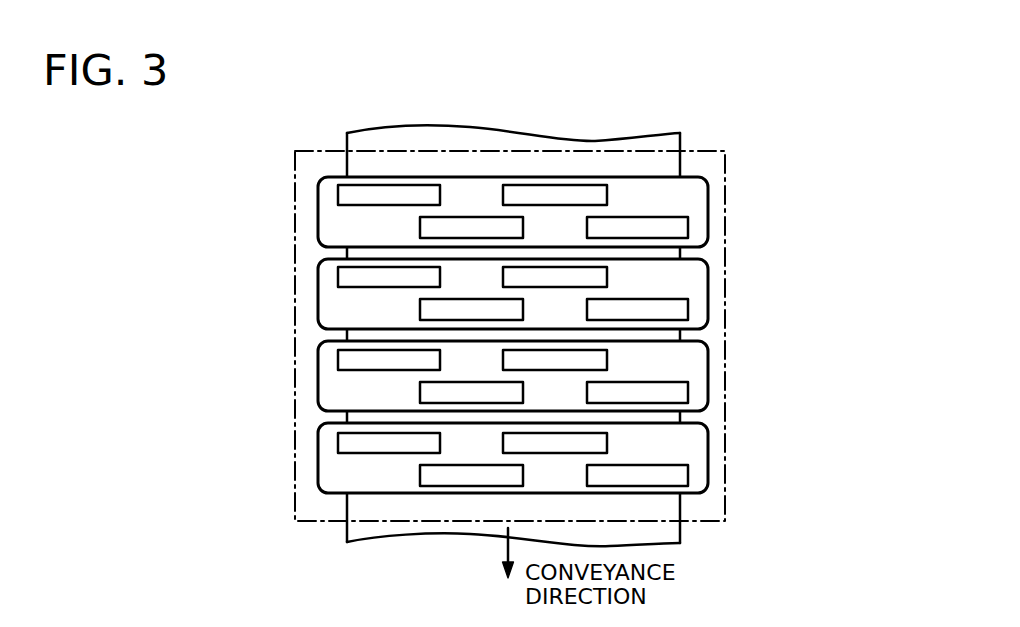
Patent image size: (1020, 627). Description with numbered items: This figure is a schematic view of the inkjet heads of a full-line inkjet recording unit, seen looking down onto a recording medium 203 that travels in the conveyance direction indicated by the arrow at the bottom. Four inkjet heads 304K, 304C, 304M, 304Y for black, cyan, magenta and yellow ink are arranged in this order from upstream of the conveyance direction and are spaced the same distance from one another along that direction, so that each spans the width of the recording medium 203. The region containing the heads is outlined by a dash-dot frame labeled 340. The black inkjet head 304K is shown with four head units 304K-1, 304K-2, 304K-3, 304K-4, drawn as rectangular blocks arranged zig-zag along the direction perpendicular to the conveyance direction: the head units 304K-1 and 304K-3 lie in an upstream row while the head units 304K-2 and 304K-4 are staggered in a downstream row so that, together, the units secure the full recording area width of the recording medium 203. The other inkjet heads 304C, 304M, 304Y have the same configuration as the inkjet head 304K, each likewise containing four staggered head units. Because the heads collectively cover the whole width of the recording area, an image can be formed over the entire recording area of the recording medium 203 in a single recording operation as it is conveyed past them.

The recording medium 203 is at (578, 139).
The print region / head unit area 340 is at (727, 325).
The inkjet head 304K is at (516, 169).
The inkjet head 304C is at (318, 293).
The inkjet head 304M is at (318, 375).
The inkjet head 304Y is at (318, 458).
The head unit 304K-1 is at (391, 185).
The head unit 304K-2 is at (480, 217).
The head unit 304K-3 is at (607, 193).
The head unit 304K-4 is at (688, 226).